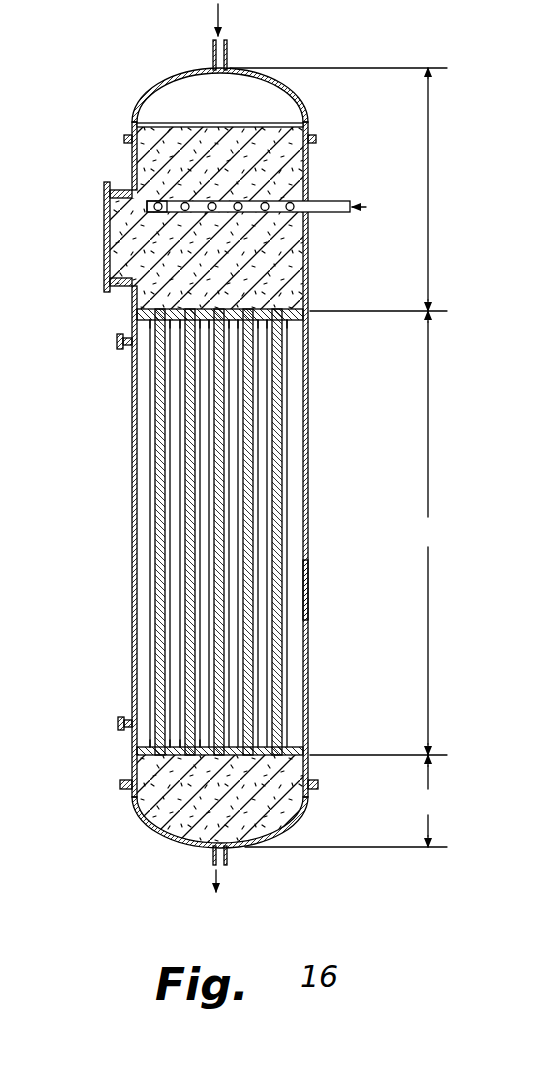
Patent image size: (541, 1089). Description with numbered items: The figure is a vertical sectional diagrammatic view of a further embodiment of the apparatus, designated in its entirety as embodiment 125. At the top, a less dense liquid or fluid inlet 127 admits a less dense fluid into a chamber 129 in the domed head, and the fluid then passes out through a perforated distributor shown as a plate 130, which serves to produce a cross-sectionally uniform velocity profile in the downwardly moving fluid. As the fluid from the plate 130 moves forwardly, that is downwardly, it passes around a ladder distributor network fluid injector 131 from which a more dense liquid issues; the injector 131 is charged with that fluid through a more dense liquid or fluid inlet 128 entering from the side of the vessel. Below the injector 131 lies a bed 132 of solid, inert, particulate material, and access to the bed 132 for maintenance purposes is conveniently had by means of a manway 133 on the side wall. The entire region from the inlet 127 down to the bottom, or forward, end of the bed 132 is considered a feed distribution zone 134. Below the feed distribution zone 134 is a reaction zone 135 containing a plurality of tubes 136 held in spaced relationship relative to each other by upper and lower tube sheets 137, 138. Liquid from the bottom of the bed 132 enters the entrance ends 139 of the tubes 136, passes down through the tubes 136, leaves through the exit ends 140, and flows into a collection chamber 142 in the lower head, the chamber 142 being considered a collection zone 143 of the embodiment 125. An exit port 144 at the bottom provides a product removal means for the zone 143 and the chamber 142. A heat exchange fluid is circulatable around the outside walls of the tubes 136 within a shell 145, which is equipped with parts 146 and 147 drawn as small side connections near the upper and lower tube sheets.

The apparatus embodiment 125 is at (130, 92).
The less dense fluid inlet 127 is at (226, 36).
The more dense fluid inlet 128 is at (380, 206).
The chamber 129 is at (187, 90).
The plate 130 is at (274, 123).
The ladder distributor network fluid injector 131 is at (148, 205).
The bed 132 is at (143, 288).
The manway 133 is at (107, 250).
The feed distribution zone 134 is at (343, 189).
The reaction zone 135 is at (431, 533).
The tubes 136 is at (230, 486).
The tube sheet 137 is at (308, 319).
The tube sheet 138 is at (308, 748).
The entrance ends 139 is at (245, 310).
The exit ends 140 is at (186, 758).
The collection chamber 142 is at (157, 828).
The collection zone 143 is at (348, 801).
The exit port 144 is at (228, 862).
The shell 145 is at (308, 573).
The port 146 is at (118, 344).
The port 147 is at (118, 729).